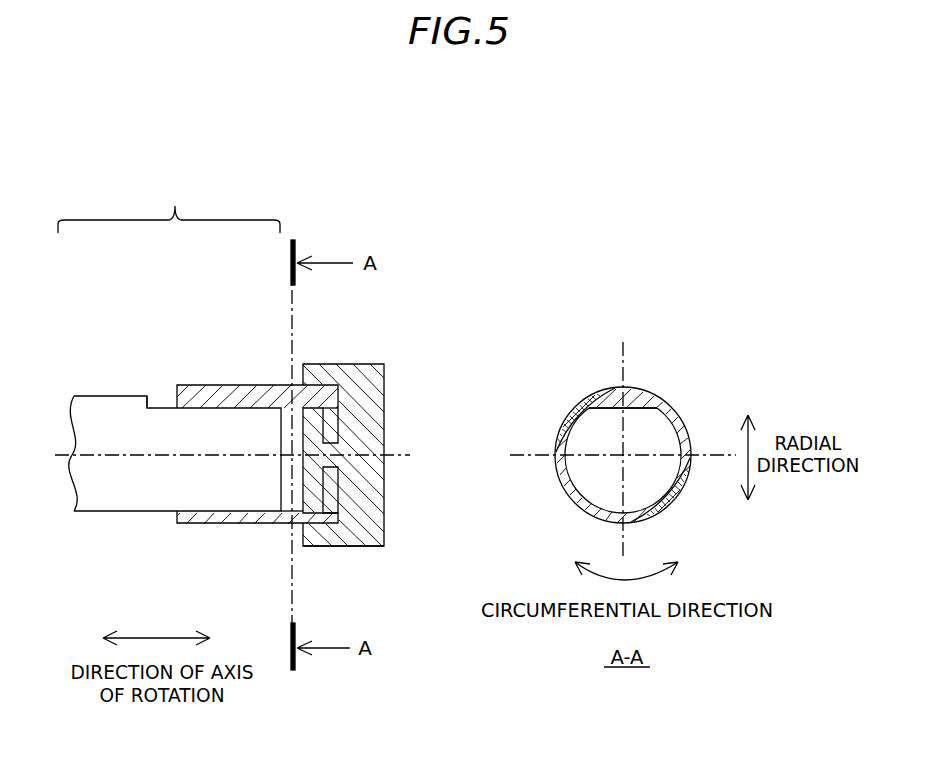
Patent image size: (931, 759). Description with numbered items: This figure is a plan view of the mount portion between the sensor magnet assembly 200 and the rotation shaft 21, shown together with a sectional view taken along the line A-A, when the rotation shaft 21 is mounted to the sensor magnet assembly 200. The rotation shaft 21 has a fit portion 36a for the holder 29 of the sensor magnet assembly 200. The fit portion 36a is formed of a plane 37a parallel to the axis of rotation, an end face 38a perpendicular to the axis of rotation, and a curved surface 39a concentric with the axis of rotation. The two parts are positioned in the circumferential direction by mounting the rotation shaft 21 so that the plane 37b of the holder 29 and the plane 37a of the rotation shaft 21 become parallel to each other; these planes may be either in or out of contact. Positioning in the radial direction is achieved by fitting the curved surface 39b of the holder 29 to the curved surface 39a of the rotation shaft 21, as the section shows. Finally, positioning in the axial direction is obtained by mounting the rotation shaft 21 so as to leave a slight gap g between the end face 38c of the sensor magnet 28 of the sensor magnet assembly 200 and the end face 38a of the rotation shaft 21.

The rotation shaft 21 is at (122, 502).
The sensor magnet 28 is at (380, 546).
The holder 29 is at (205, 516).
The fit portion 36a is at (169, 205).
The plane 37a is at (160, 392).
The plane 37b is at (616, 398).
The end face 38a is at (290, 406).
The end face 38c is at (300, 476).
The curved surface 39a is at (160, 511).
The curved surface 39b is at (556, 455).
The sensor magnet assembly 200 is at (333, 364).
The gap g is at (297, 490).